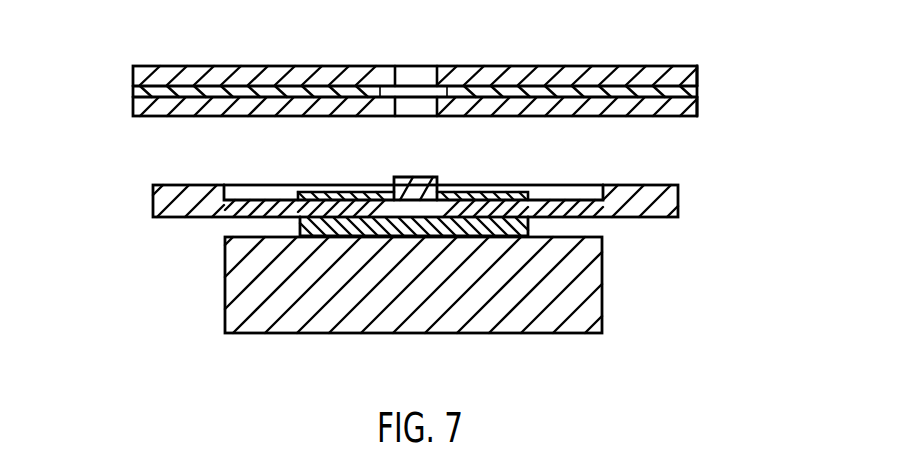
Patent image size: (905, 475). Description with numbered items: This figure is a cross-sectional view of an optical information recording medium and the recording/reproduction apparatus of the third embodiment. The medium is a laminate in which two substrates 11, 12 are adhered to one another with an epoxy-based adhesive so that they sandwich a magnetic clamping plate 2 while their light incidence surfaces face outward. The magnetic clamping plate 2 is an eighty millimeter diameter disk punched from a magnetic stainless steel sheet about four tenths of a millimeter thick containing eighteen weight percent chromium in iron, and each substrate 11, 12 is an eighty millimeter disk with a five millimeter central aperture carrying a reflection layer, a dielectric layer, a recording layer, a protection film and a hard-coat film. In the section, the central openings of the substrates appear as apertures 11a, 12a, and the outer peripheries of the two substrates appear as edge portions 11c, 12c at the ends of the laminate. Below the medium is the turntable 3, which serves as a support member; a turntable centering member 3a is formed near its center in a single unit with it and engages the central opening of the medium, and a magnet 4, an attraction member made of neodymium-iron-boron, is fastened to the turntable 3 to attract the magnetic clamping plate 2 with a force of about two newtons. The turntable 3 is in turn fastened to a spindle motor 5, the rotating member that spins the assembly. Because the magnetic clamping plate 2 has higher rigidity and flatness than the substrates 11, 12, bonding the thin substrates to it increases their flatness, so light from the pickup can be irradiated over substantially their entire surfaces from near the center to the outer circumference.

The magnetic clamping plate 2 is at (697, 88).
The substrate 11 is at (135, 72).
The substrate 12 is at (135, 104).
The cut in first sheet layer 11a is at (398, 74).
The cut in second sheet layer 12a is at (398, 107).
The end portion of first sheet layer 11c is at (688, 68).
The end portion of second sheet layer 12c is at (690, 117).
The turntable 3 is at (153, 207).
The turntable centering member 3a is at (394, 180).
The magnet 4 is at (523, 189).
The spindle motor 5 is at (602, 282).